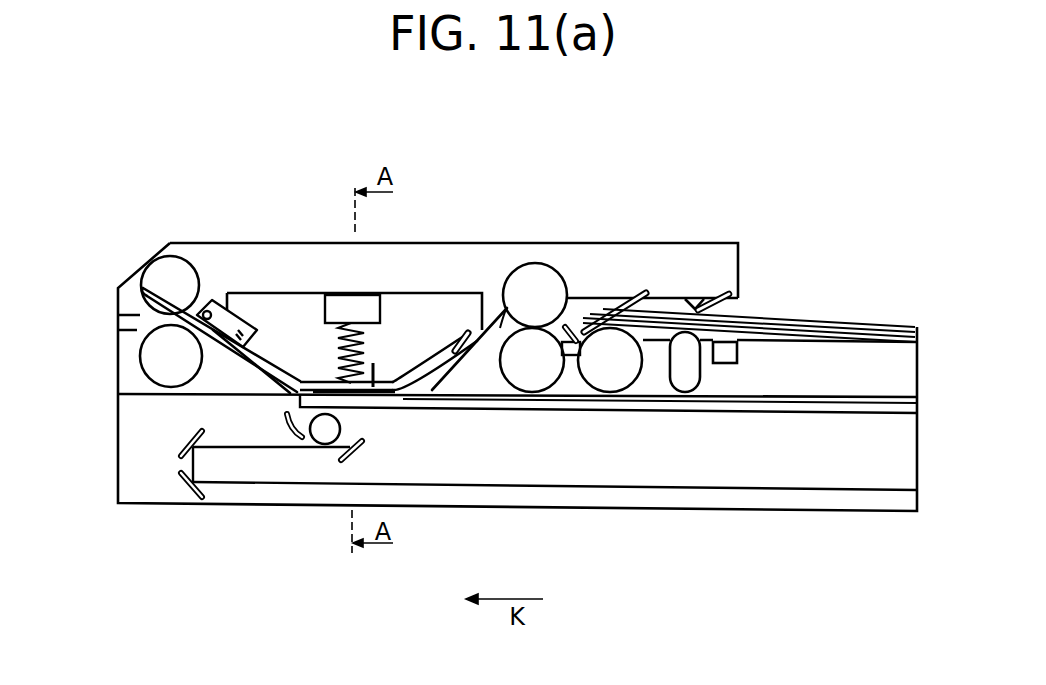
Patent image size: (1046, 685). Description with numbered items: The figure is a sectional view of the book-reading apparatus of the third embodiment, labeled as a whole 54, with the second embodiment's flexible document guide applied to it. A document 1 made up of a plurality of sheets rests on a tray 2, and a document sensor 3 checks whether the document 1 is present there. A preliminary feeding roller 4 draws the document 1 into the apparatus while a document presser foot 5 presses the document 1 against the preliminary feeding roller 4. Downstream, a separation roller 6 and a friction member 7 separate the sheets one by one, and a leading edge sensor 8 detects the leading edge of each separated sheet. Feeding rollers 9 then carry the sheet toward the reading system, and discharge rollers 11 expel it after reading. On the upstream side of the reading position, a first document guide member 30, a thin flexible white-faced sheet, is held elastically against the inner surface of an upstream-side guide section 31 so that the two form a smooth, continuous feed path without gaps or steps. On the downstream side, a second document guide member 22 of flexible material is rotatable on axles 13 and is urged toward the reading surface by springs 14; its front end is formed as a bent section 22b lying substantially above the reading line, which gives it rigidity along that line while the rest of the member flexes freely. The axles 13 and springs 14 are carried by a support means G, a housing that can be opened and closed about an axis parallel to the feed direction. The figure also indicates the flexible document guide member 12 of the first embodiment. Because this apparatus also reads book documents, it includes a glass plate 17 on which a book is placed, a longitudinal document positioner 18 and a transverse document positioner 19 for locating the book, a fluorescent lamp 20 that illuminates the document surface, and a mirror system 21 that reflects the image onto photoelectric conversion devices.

The document 1 is at (848, 326).
The tray 2 is at (787, 341).
The document sensor 3 is at (730, 346).
The preliminary feeding roller 4 is at (702, 394).
The document presser foot 5 is at (698, 291).
The separation roller 6 is at (620, 394).
The friction member 7 is at (620, 296).
The leading edge sensor 8 is at (578, 323).
The feeding rollers 9 is at (531, 393).
The discharge rollers 11 is at (138, 277).
The document guide member 12 is at (197, 381).
The axles 13 is at (190, 262).
The springs 14 is at (364, 323).
The glass plate 17 is at (813, 413).
The longitudinal document positioner 18 is at (405, 399).
The transverse document positioner 19 is at (572, 357).
The fluorescent lamp 20 is at (318, 442).
The mirror system 21 is at (180, 450).
The second document guide member 22 is at (293, 373).
The bent section 22b is at (452, 345).
The first document guide member 30 is at (500, 328).
The upstream-side guide section 31 is at (453, 396).
The sheet feeding unit 54 is at (423, 179).
The support means (housing) G is at (264, 320).